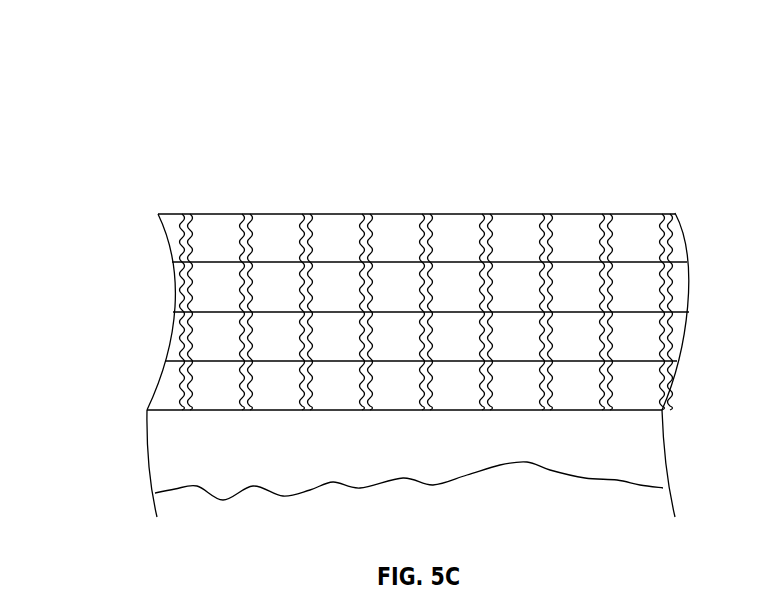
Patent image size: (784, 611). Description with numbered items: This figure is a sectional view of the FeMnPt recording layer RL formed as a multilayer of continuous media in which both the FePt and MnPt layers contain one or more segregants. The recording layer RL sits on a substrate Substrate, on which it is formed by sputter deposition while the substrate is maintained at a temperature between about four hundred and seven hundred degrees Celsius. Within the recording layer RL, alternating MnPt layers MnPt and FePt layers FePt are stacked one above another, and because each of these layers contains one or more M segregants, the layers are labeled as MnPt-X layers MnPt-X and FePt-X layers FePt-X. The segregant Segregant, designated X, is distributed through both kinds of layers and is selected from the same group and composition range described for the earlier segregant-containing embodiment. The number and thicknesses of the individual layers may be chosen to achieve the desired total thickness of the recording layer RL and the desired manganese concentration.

The recording layer RL is at (59, 214).
The MnPt layer MnPt is at (675, 248).
The FePt layer FePt is at (680, 288).
The MnPt-X layer MnPt-X is at (139, 215).
The FePt-X layer FePt-X is at (139, 312).
The segregant Segregant is at (665, 213).
The substrate Substrate is at (411, 463).